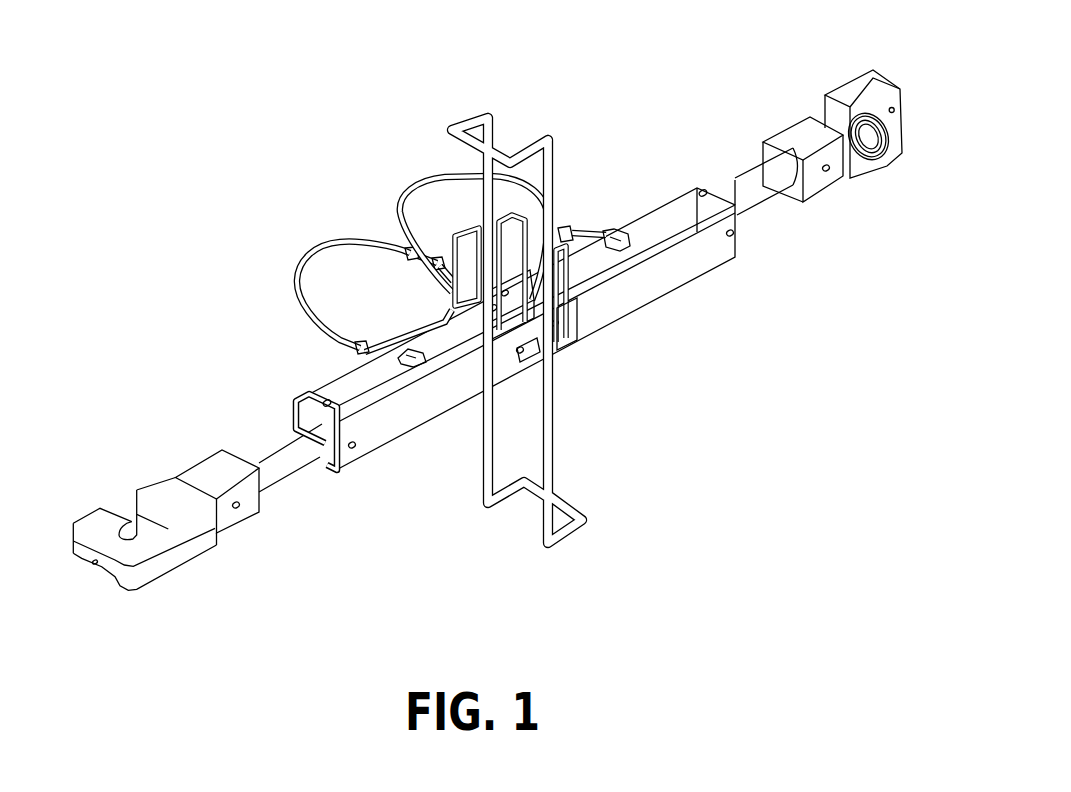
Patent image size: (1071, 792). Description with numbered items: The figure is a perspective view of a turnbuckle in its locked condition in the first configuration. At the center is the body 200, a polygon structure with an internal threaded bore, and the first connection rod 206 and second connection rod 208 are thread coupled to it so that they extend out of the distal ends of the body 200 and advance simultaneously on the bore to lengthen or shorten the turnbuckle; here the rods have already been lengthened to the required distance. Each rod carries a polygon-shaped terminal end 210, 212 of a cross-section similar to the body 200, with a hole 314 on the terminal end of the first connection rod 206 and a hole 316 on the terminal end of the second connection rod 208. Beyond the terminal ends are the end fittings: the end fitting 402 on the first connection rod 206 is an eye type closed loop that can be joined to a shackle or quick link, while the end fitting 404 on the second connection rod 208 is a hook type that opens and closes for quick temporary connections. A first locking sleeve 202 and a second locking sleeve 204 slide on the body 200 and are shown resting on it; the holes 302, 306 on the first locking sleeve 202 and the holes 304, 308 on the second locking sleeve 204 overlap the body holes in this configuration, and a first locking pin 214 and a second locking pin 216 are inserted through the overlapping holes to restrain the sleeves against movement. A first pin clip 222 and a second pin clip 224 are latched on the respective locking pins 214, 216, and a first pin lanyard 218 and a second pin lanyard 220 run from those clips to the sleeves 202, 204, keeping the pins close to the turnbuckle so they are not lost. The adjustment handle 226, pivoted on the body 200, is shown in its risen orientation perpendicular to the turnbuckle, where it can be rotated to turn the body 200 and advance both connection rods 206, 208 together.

The body 200 is at (505, 293).
The first locking sleeve 202 is at (677, 260).
The second locking sleeve 204 is at (407, 415).
The first connection rod 206 is at (747, 188).
The second connection rod 208 is at (273, 455).
The terminal end of the first connection rod 210 is at (800, 135).
The terminal end of the second connection rod 212 is at (210, 472).
The first locking pin 214 is at (572, 342).
The second locking pin 216 is at (532, 352).
The first pin lanyard 218 is at (447, 175).
The second pin lanyard 220 is at (305, 253).
The first pin clip 222 is at (517, 268).
The second pin clip 224 is at (512, 220).
The adjustment handle 226 is at (474, 113).
The holes on first locking sleeve 302 is at (565, 340).
The holes on second locking sleeve 304 is at (520, 353).
The holes on first locking sleeve 306 is at (733, 235).
The holes on second locking sleeve 308 is at (352, 448).
The hole on the terminal end of the first connection rod 314 is at (829, 171).
The hole on the terminal end of the second connection rod 316 is at (238, 509).
The end fitting for first connection rod 402 is at (857, 88).
The end fitting for second connection rod 404 is at (172, 507).